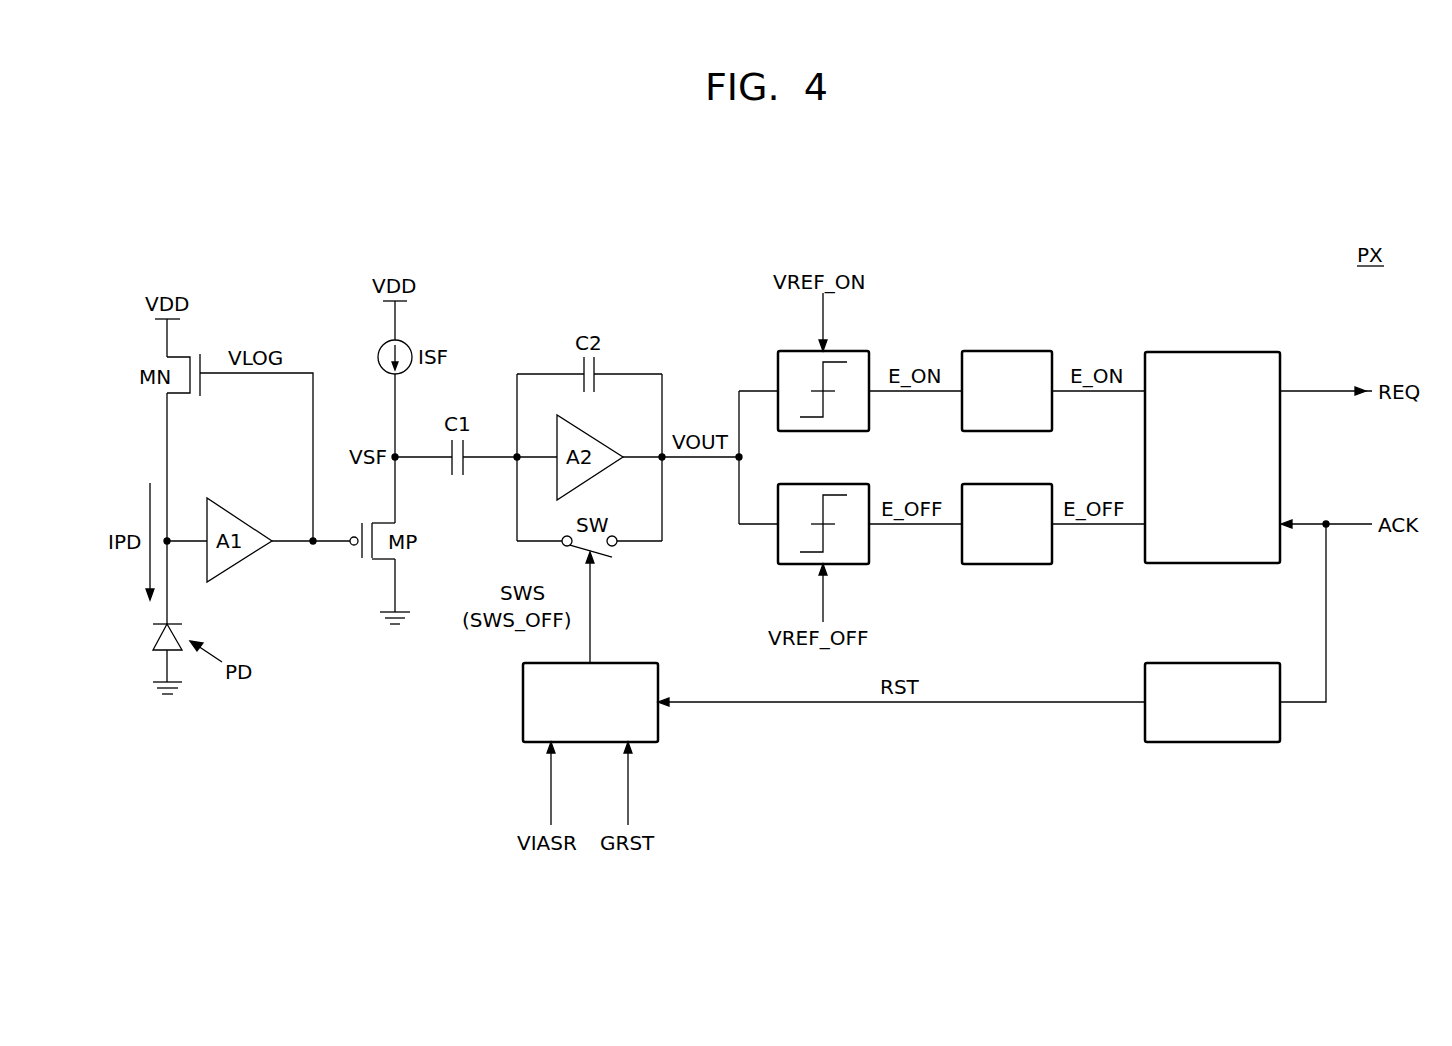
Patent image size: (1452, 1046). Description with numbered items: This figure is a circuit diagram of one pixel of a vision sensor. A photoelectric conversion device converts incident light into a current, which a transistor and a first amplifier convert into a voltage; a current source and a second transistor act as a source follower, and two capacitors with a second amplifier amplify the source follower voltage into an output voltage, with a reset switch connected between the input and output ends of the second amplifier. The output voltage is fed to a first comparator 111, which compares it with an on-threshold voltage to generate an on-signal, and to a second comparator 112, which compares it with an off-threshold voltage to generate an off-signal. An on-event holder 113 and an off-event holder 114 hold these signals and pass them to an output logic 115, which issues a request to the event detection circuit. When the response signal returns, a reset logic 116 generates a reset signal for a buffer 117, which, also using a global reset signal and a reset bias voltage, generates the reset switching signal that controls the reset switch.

The first comparator 111 is at (843, 351).
The second comparator 112 is at (843, 484).
The on-event holder 113 is at (1027, 351).
The off-event holder 114 is at (1027, 484).
The output logic 115 is at (1232, 352).
The reset logic 116 is at (1232, 663).
The buffer 117 is at (608, 663).